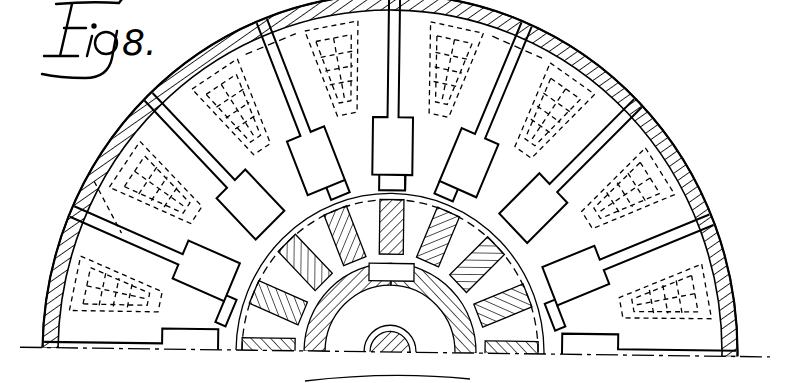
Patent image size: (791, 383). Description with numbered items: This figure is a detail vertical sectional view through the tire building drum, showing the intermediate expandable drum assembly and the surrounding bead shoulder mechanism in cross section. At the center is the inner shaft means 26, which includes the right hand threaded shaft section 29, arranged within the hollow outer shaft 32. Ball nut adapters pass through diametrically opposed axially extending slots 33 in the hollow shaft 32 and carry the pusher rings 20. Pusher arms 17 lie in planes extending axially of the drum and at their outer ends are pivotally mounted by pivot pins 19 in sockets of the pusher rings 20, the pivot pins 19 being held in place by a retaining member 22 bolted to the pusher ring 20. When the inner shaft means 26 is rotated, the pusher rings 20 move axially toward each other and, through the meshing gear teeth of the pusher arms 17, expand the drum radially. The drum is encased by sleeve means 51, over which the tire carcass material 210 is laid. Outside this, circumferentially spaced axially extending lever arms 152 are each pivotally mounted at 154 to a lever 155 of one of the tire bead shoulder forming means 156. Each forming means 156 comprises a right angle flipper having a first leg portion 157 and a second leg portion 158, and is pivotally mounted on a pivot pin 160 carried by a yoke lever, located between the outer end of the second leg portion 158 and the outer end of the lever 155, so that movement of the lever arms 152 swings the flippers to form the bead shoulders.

The pusher arm 17 is at (431, 175).
The pivot pin 19 is at (214, 317).
The pusher ring 20 is at (520, 345).
The retaining member 22 is at (540, 320).
The inner shaft means 26 is at (378, 340).
The right hand threaded shaft section 29 is at (432, 340).
The hollow outer shaft 32 is at (446, 298).
The axially extending slot 33 is at (384, 278).
The sleeve means 51 is at (656, 118).
The lever arm 152 is at (391, 234).
The pivotal mounting 154 is at (392, 201).
The lever 155 is at (390, 288).
The tire bead shoulder forming means 156 is at (525, 68).
The first leg portion 157 is at (296, 192).
The second leg portion 158 is at (272, 24).
The pivot pin 160 is at (88, 186).
The tire carcass material 210 is at (600, 80).